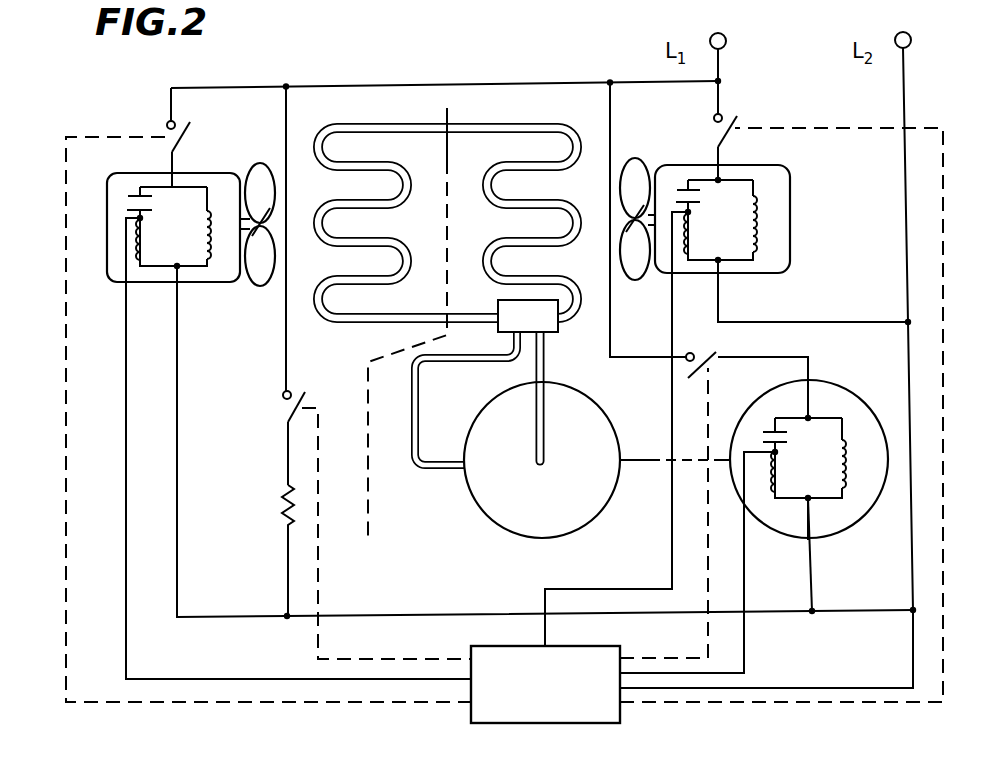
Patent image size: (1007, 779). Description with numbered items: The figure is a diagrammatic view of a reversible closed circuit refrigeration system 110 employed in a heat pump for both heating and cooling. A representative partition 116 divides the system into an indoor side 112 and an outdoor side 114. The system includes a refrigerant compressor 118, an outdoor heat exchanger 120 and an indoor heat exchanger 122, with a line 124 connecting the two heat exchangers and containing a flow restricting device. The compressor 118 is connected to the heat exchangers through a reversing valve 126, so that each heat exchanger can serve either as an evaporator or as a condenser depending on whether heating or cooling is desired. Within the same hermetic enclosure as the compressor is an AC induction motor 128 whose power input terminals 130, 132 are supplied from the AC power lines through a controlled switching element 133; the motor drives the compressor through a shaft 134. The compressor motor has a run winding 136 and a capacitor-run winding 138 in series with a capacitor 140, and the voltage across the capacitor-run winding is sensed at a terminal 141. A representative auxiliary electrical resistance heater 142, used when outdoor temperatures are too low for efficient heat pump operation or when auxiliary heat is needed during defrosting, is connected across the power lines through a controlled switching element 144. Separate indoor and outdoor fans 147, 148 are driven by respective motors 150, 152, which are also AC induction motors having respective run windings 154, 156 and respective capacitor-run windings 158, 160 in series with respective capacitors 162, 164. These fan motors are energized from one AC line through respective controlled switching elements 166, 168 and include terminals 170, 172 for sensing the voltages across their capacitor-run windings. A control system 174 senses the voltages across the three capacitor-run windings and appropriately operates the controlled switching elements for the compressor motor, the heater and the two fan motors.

The reversible closed circuit refrigeration system 110 is at (350, 56).
The indoor side 112 is at (350, 114).
The outdoor side 114 is at (516, 114).
The partition 116 is at (444, 118).
The refrigerant compressor 118 is at (473, 521).
The outdoor heat exchanger 120 is at (526, 207).
The indoor heat exchanger 122 is at (350, 200).
The line 124 is at (541, 123).
The reversing valve 126 is at (549, 340).
The AC induction motor 128 is at (818, 381).
The power input terminal 130 is at (812, 417).
The power input terminal 132 is at (810, 502).
The controlled switching element 133 is at (704, 360).
The shaft 134 is at (640, 457).
The run winding 136 is at (847, 479).
The capacitor-run winding 138 is at (772, 490).
The capacitor 140 is at (762, 430).
The terminal 141 is at (799, 472).
The auxiliary electrical resistance heater 142 is at (289, 493).
The controlled switching element 144 is at (292, 417).
The indoor fan 147 is at (258, 290).
The outdoor fan 148 is at (635, 159).
The motor 150 is at (206, 170).
The motor 152 is at (791, 175).
The run winding 154 is at (209, 256).
The run winding 156 is at (762, 243).
The capacitor-run winding 158 is at (164, 240).
The capacitor-run winding 160 is at (681, 273).
The capacitor 162 is at (131, 194).
The capacitor 164 is at (714, 204).
The controlled switching element 166 is at (160, 116).
The controlled switching element 168 is at (731, 97).
The terminal 170 is at (136, 218).
The terminal 172 is at (687, 189).
The control system 174 is at (470, 651).